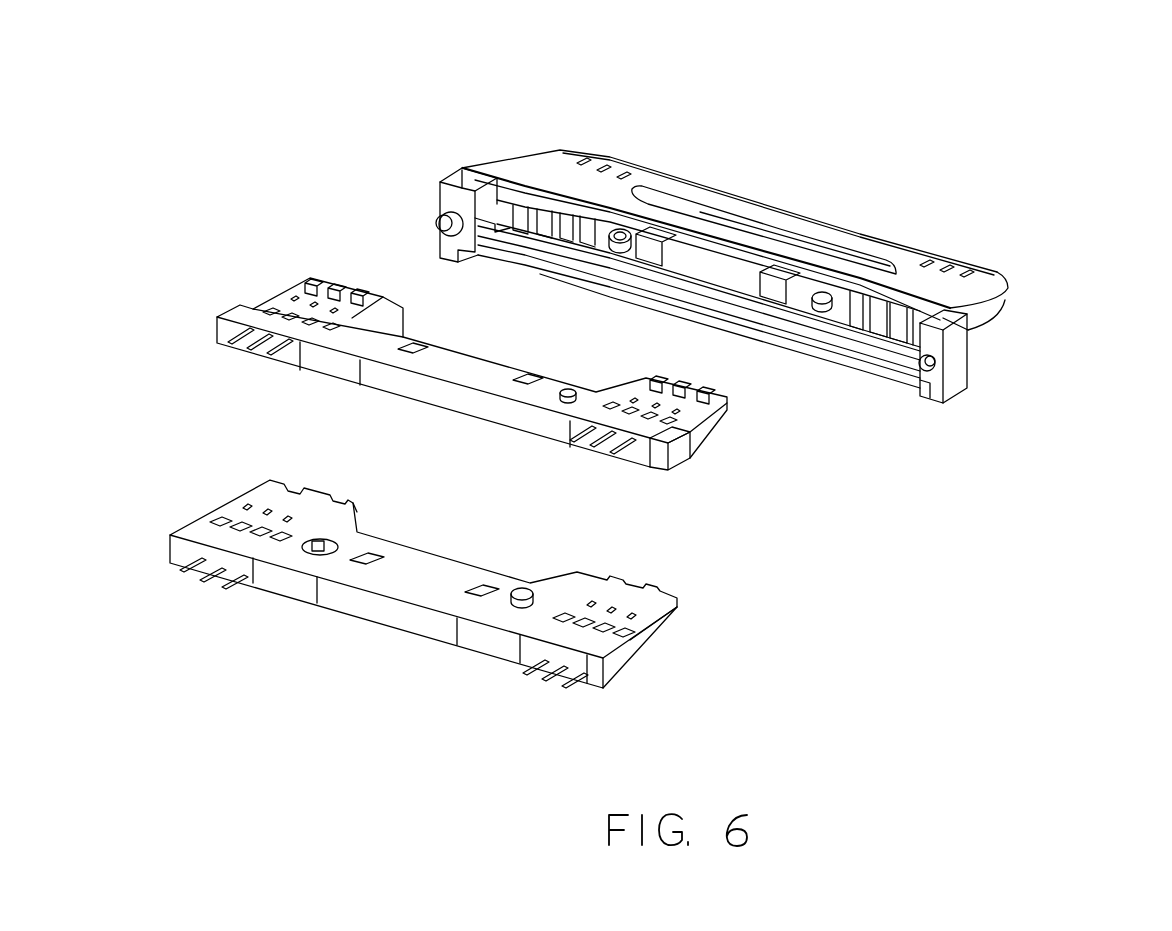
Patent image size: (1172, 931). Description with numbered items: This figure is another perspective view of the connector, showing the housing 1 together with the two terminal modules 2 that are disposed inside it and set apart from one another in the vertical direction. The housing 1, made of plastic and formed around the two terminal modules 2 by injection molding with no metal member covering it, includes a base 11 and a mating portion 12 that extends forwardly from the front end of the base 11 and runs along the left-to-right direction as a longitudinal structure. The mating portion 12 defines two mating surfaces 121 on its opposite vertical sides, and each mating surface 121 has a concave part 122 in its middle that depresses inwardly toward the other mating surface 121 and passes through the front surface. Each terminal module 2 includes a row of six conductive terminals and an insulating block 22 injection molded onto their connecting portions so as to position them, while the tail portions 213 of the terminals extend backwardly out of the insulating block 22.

The housing 1 is at (782, 234).
The base 11 is at (957, 353).
The mating portion 12 is at (781, 228).
The mating surface 121 is at (918, 283).
The concave part 122 is at (803, 230).
The terminal module 2 is at (667, 453).
The insulating block 22 is at (637, 638).
The tail portion 213 is at (571, 686).